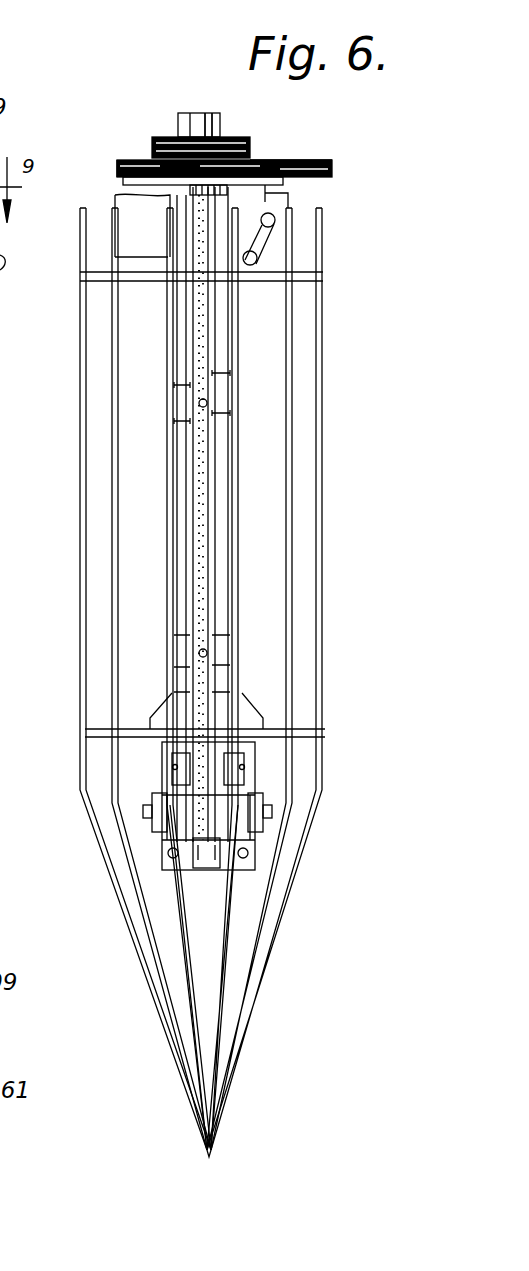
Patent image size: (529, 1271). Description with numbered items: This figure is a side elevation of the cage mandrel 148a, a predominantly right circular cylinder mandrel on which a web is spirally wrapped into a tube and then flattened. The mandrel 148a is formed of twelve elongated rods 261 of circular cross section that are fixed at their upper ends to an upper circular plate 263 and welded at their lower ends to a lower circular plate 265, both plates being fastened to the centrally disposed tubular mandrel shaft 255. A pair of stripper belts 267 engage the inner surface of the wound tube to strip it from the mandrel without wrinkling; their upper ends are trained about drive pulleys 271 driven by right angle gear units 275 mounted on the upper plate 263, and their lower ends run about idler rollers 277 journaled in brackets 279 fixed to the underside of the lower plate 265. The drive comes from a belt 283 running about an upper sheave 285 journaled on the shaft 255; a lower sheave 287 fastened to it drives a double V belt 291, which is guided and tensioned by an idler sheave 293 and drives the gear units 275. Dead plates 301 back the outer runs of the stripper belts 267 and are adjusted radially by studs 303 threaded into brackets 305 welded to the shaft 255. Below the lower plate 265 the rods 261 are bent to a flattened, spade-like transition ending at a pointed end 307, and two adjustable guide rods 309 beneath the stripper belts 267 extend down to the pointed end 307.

The mandrel 148a is at (76, 627).
The mandrel support shaft 255 is at (190, 118).
The elongated rods 261 is at (113, 355).
The upper circular plate 263 is at (277, 268).
The lower circular plate 265 is at (307, 732).
The stripper belts 267 is at (208, 535).
The drive pulleys 271 is at (115, 200).
The right angle gear units 275 is at (140, 190).
The idler rollers 277 is at (222, 790).
The brackets 279 is at (150, 832).
The belt 283 is at (153, 147).
The upper sheave 285 is at (232, 136).
The lower sheave 287 is at (131, 160).
The belt 291 is at (335, 168).
The idler sheave 293 is at (312, 158).
The dead plates 301 is at (228, 372).
The studs 303 is at (199, 403).
The brackets 305 is at (224, 410).
The pointed end 307 is at (211, 1160).
The guide rods 309 is at (210, 1007).